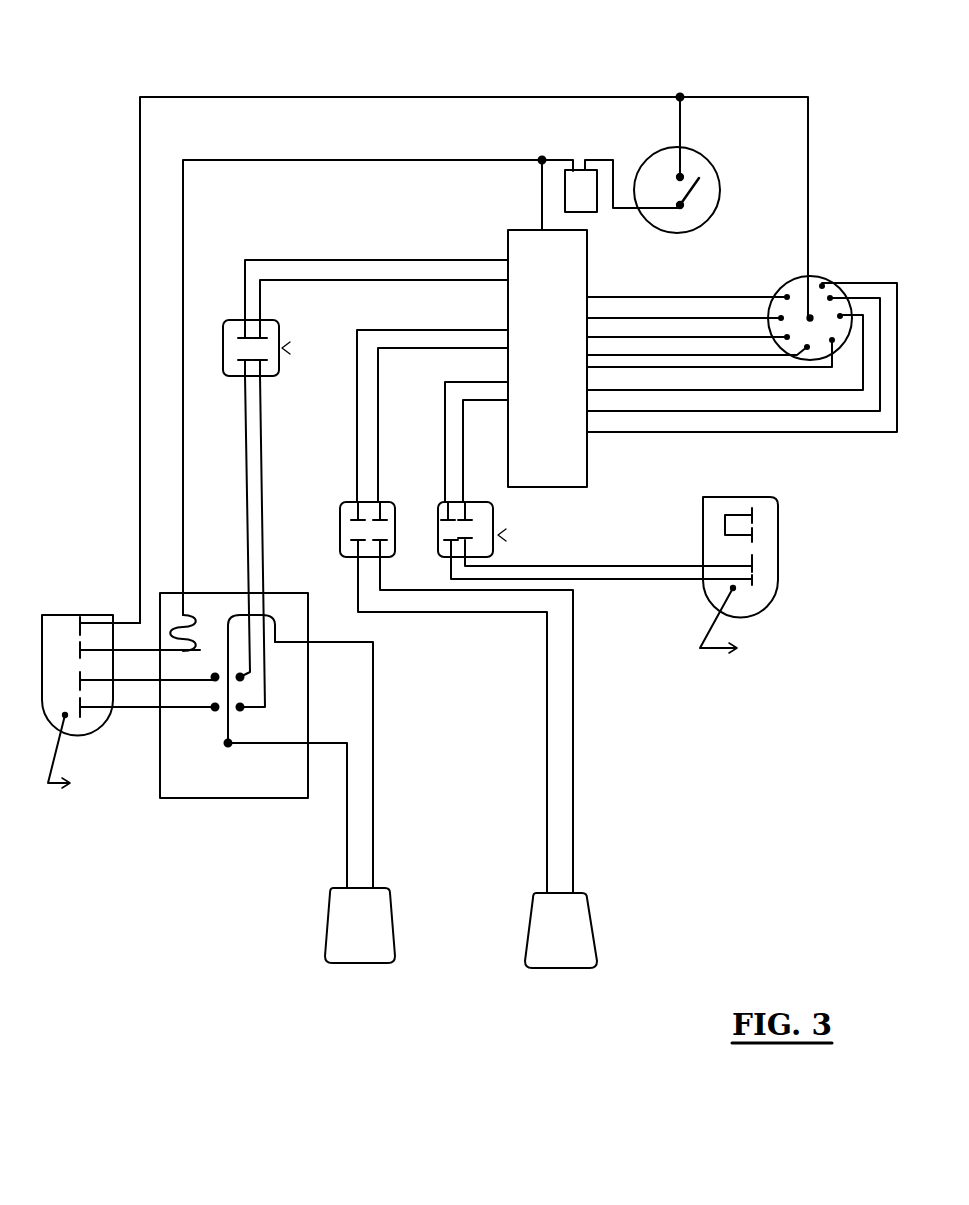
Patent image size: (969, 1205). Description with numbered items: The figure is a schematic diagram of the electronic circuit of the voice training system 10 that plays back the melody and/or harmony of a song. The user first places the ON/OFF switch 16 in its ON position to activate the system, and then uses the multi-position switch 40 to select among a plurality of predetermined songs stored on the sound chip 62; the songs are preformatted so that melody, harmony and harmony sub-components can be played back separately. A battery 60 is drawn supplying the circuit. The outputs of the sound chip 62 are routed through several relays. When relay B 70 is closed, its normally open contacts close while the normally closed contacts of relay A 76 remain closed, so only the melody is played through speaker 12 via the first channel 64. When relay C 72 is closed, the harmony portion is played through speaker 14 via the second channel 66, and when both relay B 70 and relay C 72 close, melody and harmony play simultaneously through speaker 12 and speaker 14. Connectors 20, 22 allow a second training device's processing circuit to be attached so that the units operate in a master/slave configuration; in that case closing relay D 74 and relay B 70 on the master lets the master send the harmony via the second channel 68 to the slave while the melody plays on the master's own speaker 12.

The voice training system 10 is at (448, 32).
The speaker 12 is at (330, 957).
The speaker 14 is at (596, 960).
The ON/OFF switch 16 is at (705, 168).
The connector 20 is at (67, 622).
The connector 22 is at (767, 545).
The multi-position switch 40 is at (812, 278).
The battery 60 is at (577, 160).
The sound chip 62 is at (519, 228).
The channel 1 64 is at (298, 274).
The channel 2 66 is at (403, 338).
The channel 2 68 is at (472, 396).
The relay B 70 is at (230, 337).
The relay C 72 is at (347, 553).
The relay D 74 is at (443, 537).
The relay A 76 is at (203, 800).